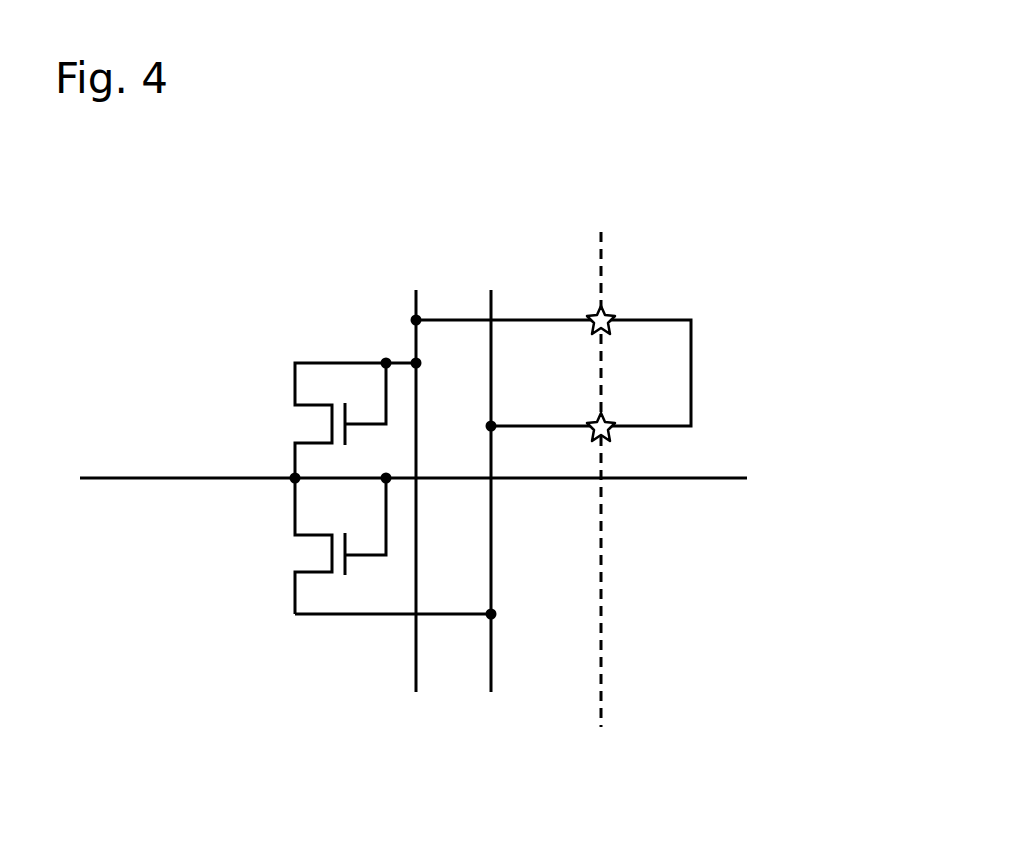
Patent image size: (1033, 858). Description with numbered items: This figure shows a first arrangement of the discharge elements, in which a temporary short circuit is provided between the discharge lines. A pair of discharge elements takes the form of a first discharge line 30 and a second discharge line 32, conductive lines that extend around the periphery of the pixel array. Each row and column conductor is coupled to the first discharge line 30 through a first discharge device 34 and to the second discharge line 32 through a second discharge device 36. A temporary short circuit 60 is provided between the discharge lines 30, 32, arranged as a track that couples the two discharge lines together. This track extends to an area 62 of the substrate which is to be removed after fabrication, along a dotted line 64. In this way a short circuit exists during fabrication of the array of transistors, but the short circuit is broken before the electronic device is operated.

The first discharge line 30 is at (414, 302).
The second discharge line 32 is at (490, 300).
The first discharge device 34 is at (242, 437).
The second discharge device 36 is at (242, 561).
The temporary short circuit 60 is at (691, 365).
The area of the substrate 62 is at (832, 232).
The dotted line 64 is at (602, 560).